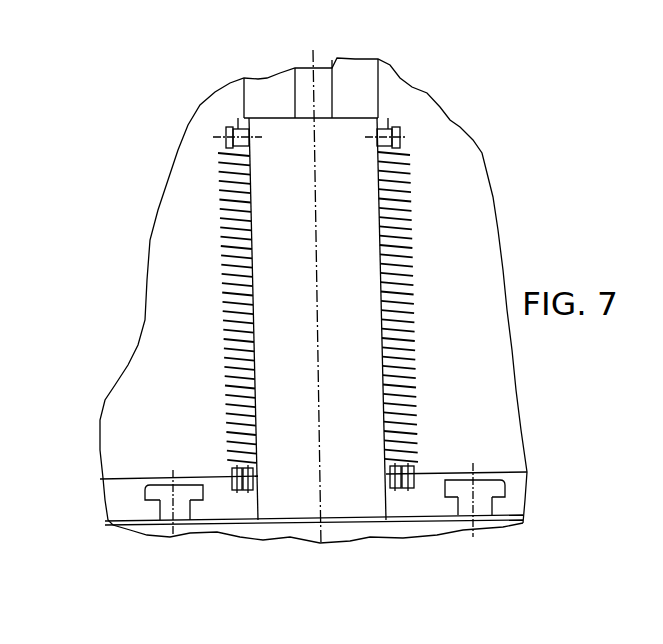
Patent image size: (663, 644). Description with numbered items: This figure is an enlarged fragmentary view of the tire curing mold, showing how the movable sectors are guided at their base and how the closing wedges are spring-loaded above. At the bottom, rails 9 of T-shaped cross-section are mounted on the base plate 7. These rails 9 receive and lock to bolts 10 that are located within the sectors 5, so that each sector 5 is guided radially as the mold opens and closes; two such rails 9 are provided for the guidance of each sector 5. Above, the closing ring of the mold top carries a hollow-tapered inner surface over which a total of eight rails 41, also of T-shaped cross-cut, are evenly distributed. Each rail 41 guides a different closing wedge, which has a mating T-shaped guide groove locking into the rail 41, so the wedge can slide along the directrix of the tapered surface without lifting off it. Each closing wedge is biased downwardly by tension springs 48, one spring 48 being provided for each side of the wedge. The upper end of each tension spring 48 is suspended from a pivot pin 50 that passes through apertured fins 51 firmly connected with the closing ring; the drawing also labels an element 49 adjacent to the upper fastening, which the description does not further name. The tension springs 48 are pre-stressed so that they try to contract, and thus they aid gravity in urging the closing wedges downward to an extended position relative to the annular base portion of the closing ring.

The sector 5 is at (513, 480).
The base plate 7 is at (507, 524).
The rail 9 is at (163, 503).
The bolt 10 is at (147, 489).
The rail 41 is at (322, 100).
The tension spring 48 is at (403, 197).
The upper fastening bolts 49 is at (385, 124).
The pivot pin 50 is at (350, 503).
The apertured fin 51 is at (395, 488).